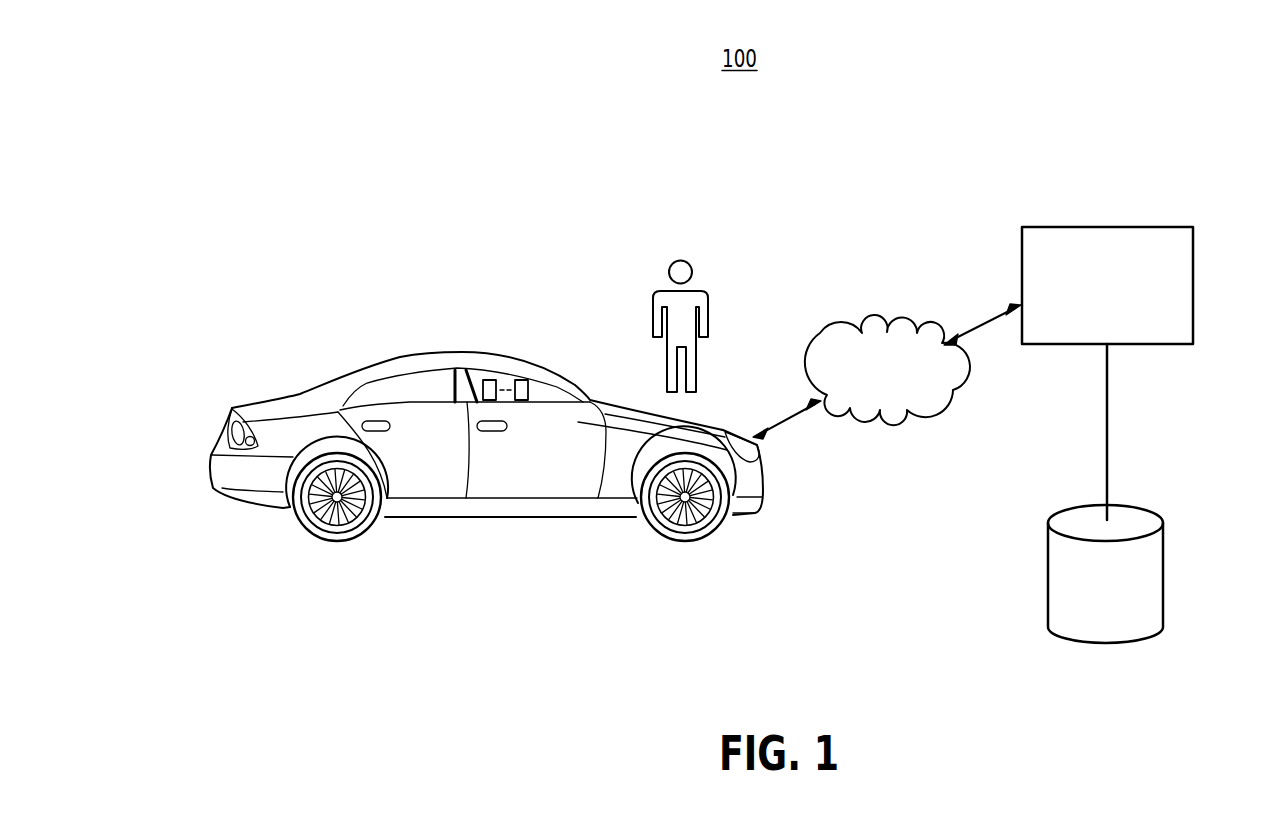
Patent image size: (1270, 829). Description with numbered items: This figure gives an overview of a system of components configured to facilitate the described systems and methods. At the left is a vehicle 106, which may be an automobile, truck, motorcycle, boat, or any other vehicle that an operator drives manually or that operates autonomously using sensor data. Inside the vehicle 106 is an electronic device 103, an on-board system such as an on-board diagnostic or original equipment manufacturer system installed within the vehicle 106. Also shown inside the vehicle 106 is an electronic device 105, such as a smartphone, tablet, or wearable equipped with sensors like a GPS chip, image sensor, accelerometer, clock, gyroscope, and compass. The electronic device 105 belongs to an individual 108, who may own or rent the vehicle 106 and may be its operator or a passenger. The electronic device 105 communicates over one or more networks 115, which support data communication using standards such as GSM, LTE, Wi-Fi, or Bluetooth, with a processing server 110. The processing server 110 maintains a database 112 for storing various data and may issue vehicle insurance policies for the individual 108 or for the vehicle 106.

The electronic device 103 is at (520, 379).
The electronic device 105 is at (487, 379).
The vehicle 106 is at (352, 372).
The individual 108 is at (665, 292).
The processing server 110 is at (1072, 226).
The database 112 is at (1084, 520).
The networks 115 is at (875, 315).